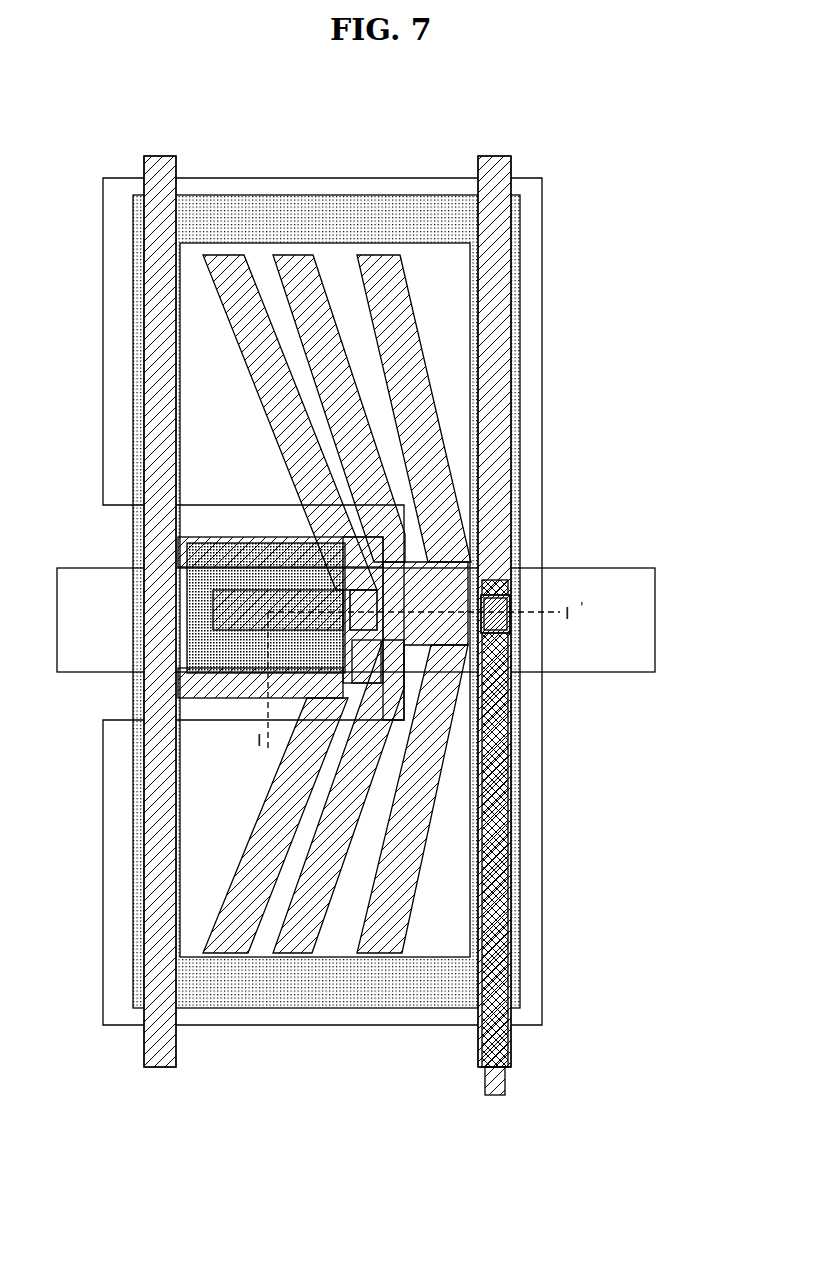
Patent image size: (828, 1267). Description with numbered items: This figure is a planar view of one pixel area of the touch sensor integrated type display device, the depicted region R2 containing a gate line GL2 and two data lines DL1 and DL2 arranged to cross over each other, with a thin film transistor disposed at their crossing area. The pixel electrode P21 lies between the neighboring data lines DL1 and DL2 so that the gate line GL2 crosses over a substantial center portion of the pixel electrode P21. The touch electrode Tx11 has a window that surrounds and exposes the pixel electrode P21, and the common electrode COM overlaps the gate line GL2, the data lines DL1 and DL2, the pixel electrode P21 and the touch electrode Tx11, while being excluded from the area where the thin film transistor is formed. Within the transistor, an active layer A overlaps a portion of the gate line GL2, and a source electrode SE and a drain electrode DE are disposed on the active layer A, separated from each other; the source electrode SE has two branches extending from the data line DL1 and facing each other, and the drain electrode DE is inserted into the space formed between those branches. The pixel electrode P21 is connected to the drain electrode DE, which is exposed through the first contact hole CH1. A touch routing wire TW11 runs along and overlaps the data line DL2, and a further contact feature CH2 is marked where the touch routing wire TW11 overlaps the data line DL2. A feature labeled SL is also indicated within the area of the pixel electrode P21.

The pixel region R2 is at (98, 106).
The data line DL1 is at (159, 155).
The data line DL2 is at (494, 155).
The touch electrode Tx11 is at (335, 200).
The common electrode COM is at (536, 186).
The pixel electrode P21 is at (395, 292).
The slit SL is at (363, 352).
The first contact hole CH1 is at (362, 594).
The second contact hole CH2 is at (487, 592).
The active layer A is at (335, 592).
The gate line GL2 is at (652, 625).
The drain electrode DE is at (215, 597).
The source electrode SE is at (222, 690).
The touch routing wire TW11 is at (507, 1085).